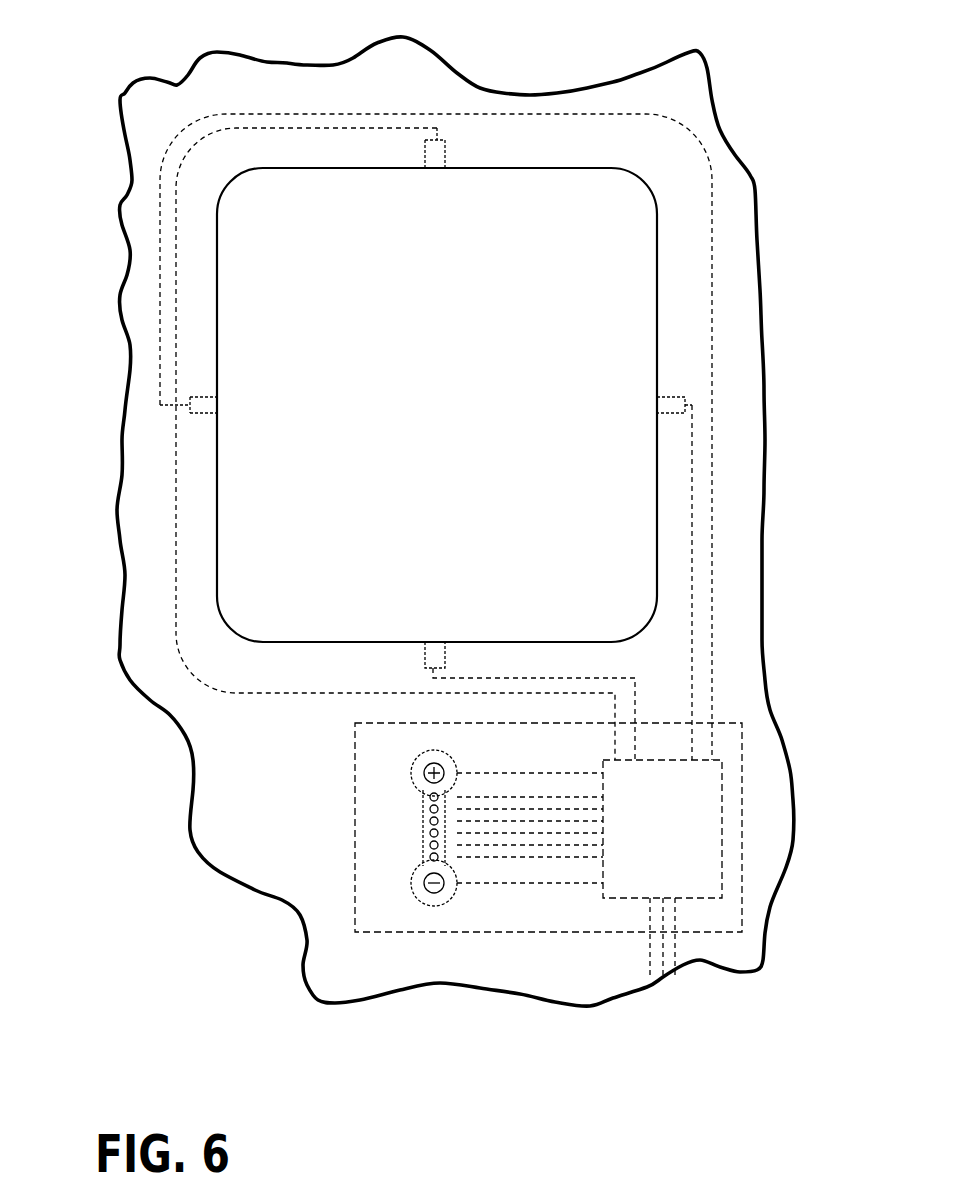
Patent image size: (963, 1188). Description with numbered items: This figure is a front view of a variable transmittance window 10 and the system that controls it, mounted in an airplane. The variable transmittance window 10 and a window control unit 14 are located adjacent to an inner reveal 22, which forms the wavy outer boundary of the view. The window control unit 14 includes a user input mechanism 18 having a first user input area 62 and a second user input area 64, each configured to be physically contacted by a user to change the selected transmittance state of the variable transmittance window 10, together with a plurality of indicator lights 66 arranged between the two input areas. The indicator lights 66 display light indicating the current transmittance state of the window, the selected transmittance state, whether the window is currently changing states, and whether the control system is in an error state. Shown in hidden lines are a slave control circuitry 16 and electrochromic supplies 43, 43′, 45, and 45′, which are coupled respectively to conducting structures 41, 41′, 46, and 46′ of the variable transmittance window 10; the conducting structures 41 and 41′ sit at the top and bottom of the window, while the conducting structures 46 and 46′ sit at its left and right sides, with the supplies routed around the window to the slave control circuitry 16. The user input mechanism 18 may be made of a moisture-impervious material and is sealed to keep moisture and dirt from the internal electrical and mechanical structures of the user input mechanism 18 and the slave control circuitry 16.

The variable transmittance window 10 is at (333, 168).
The window control unit 14 is at (355, 738).
The slave control circuitry 16 is at (710, 825).
The user input mechanism 18 is at (453, 892).
The inner reveal 22 is at (737, 212).
The conducting structure 41 is at (447, 162).
The conducting structure 41′ is at (425, 652).
The electrochromic supply 43 is at (623, 740).
The electrochromic supply 43′ is at (645, 695).
The electrochromic supply 45 is at (715, 700).
The electrochromic supply 45′ is at (700, 550).
The conducting structure 46 is at (197, 397).
The conducting structure 46′ is at (683, 398).
The first user input area 62 is at (413, 773).
The second user input area 64 is at (423, 883).
The indicator lights 66 is at (428, 857).